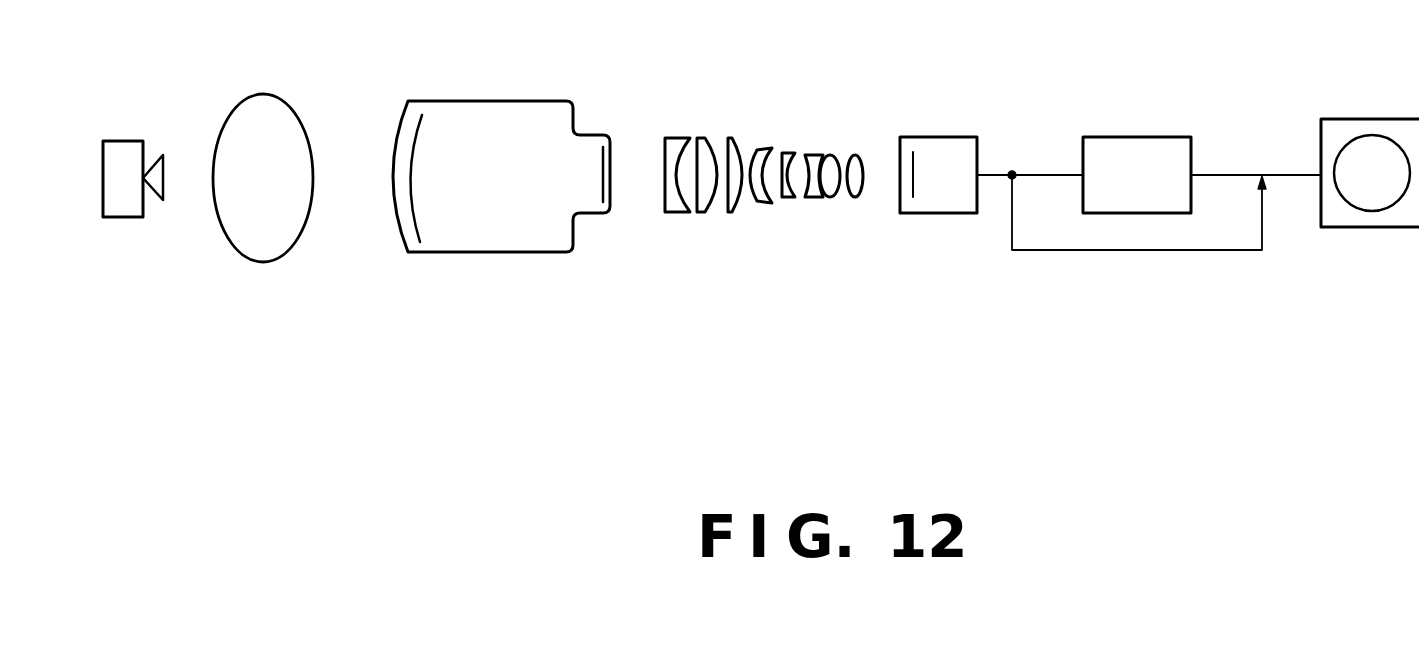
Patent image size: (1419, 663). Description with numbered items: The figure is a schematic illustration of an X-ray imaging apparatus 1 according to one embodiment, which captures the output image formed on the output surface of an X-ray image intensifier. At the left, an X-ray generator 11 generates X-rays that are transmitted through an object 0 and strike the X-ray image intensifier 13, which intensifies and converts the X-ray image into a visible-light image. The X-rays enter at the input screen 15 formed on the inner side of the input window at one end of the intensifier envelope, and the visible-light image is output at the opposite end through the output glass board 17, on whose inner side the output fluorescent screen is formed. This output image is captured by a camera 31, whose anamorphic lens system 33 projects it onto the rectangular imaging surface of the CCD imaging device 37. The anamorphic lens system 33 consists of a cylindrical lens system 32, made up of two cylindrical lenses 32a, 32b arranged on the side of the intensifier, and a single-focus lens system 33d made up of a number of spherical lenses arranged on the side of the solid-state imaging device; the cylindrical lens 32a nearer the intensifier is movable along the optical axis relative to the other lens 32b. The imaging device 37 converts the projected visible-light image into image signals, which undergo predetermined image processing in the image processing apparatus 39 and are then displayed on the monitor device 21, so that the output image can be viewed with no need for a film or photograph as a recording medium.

The X-ray imaging apparatus 1 is at (1159, 166).
The object 0 is at (253, 238).
The X-ray generator 11 is at (117, 216).
The X-ray image intensifier 13 is at (469, 193).
The input screen 15 is at (413, 222).
The output glass board 17 is at (600, 160).
The camera 31 is at (777, 196).
The cylindrical lens system 32 is at (680, 115).
The cylindrical lens 32a is at (665, 143).
The cylindrical lens 32b is at (722, 143).
The anamorphic lens system 33 is at (764, 180).
The single-focus lens system 33d is at (745, 112).
The CCD imaging device 37 is at (917, 160).
The image processing apparatus 39 is at (1140, 215).
The monitor device 21 is at (1372, 228).